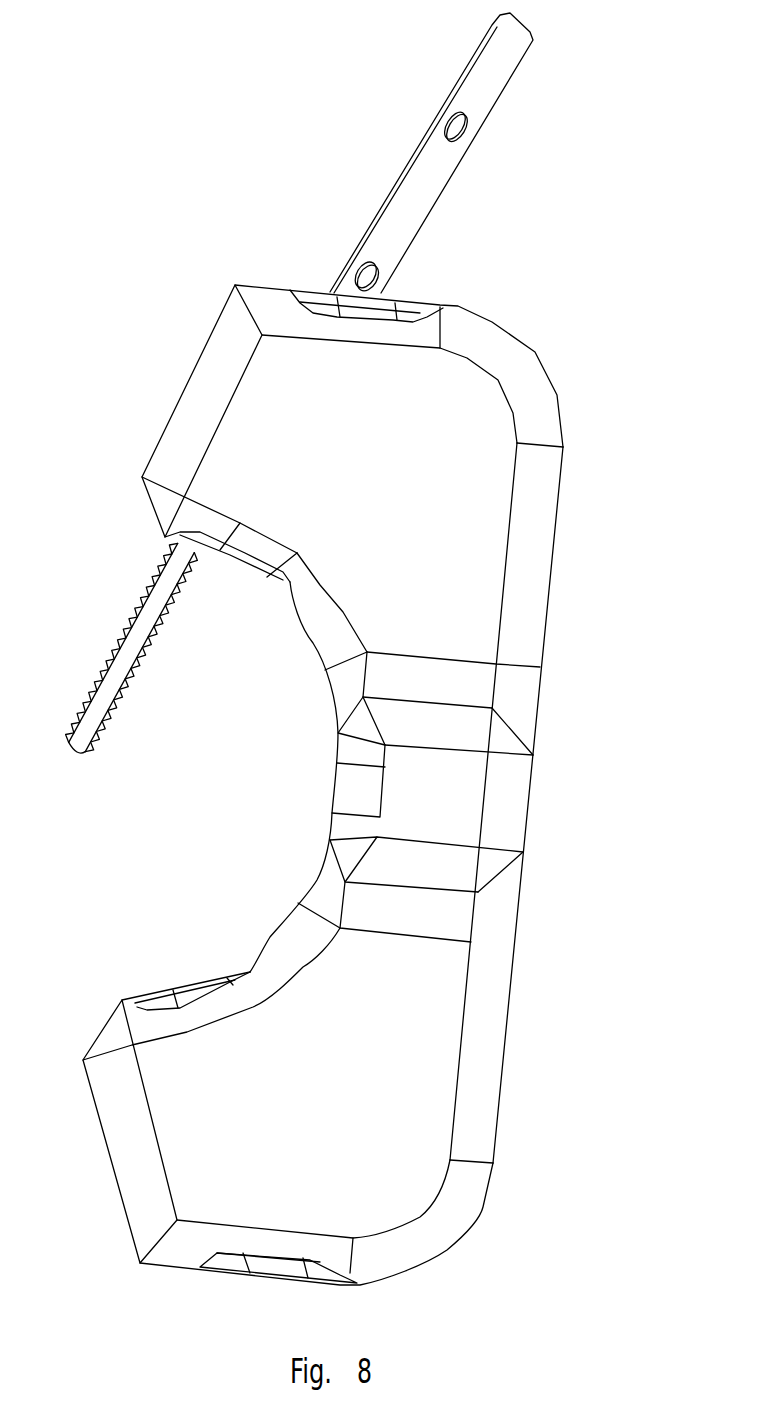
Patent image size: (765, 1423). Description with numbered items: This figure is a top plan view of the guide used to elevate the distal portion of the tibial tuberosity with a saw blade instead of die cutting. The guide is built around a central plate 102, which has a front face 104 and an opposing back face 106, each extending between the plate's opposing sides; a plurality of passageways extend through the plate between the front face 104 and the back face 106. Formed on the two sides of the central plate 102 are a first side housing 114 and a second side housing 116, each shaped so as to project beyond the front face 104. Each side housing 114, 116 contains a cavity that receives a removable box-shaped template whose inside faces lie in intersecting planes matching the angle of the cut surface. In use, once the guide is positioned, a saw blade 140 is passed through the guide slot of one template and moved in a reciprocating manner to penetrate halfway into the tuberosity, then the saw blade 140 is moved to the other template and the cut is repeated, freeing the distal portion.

The central plate 102 is at (452, 817).
The front face 104 is at (337, 750).
The back face 106 is at (533, 755).
The first side housing 114 is at (460, 413).
The second side housing 116 is at (380, 1178).
The saw blade 140 is at (437, 183).